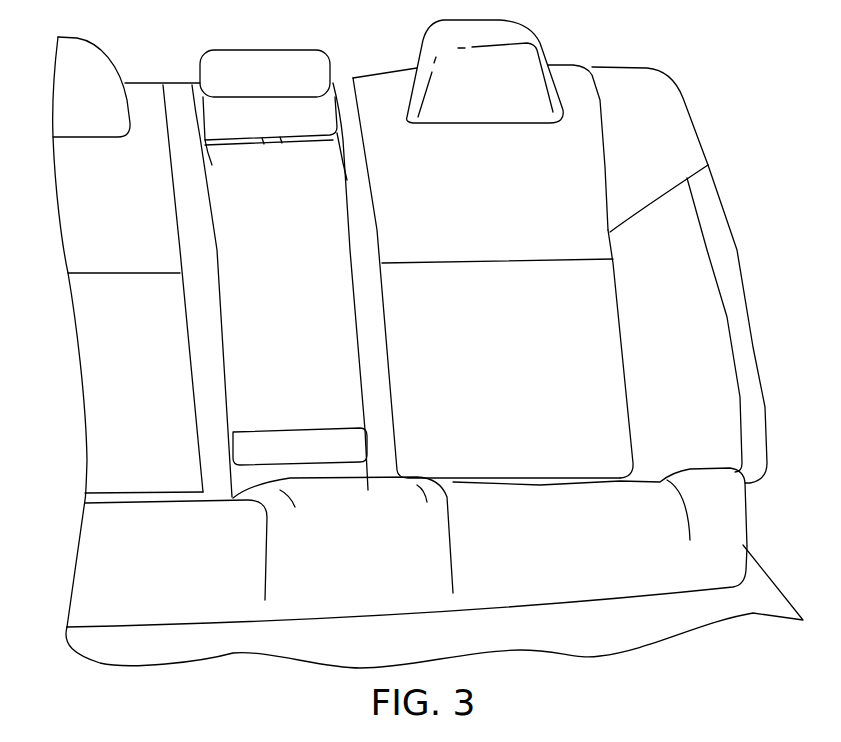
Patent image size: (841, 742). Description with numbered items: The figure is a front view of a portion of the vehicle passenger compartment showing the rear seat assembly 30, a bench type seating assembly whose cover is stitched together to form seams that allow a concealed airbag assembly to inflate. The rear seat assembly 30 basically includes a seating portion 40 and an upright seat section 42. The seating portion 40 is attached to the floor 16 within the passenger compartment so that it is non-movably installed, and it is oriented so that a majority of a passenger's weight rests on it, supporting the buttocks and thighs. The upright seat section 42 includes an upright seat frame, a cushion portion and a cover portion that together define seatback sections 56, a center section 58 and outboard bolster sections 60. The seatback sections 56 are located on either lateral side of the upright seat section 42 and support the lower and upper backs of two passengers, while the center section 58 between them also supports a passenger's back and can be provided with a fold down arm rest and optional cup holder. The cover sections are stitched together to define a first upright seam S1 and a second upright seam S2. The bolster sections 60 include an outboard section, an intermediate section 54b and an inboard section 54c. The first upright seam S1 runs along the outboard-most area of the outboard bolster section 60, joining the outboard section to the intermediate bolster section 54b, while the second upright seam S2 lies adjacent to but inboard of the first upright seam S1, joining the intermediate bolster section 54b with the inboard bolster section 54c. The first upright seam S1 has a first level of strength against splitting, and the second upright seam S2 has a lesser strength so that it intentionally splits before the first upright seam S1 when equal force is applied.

The floor 16 is at (757, 597).
The rear seat assembly 30 is at (575, 58).
The seating portion 40 is at (568, 550).
The upright seat section 42 is at (385, 102).
The intermediate bolster section 54b is at (749, 325).
The inboard bolster section 54c is at (660, 240).
The seatback section 56 is at (110, 207).
The center section 58 is at (277, 332).
The outboard bolster section 60 is at (658, 137).
The first upright seam S1 is at (763, 363).
The second upright seam S2 is at (728, 318).